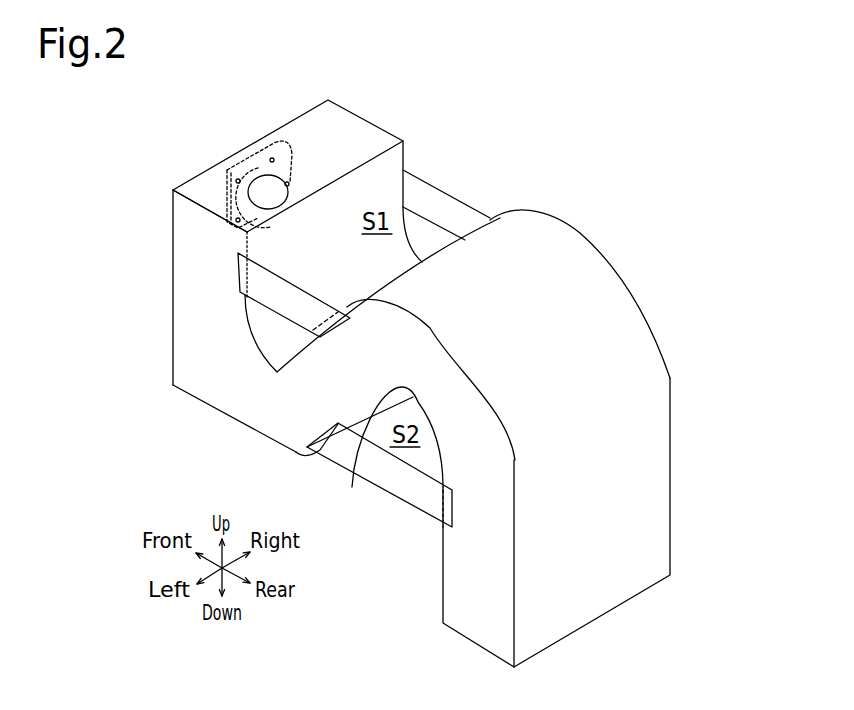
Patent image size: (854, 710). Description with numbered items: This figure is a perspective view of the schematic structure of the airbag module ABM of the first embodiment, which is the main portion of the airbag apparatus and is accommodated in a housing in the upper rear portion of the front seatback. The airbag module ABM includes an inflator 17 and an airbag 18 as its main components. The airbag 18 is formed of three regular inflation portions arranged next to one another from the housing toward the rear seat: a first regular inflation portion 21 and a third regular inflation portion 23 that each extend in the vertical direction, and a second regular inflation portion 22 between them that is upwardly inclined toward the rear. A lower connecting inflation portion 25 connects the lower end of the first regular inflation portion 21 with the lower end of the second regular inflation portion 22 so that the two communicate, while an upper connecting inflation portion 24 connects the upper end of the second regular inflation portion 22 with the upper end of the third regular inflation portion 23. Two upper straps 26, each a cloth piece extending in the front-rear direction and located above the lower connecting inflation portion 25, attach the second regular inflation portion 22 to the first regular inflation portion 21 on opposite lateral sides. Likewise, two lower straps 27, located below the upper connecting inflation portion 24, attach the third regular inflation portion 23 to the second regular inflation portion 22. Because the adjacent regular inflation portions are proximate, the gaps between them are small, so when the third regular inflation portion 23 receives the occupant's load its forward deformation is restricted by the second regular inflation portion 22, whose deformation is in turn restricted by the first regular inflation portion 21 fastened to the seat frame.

The inflator 17 is at (276, 179).
The airbag 18 is at (620, 220).
The first regular inflation portion 21 is at (190, 325).
The second regular inflation portion 22 is at (357, 407).
The third regular inflation portion 23 is at (652, 452).
The upper connecting inflation portion 24 is at (558, 235).
The lower connecting inflation portion 25 is at (278, 428).
The upper strap 26 is at (448, 202).
The lower strap 27 is at (390, 487).
The airbag module ABM is at (232, 142).